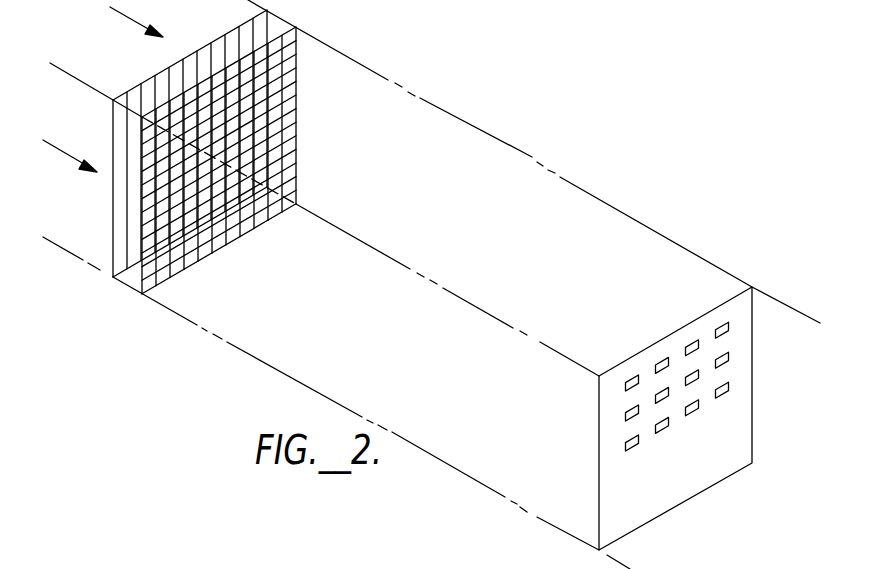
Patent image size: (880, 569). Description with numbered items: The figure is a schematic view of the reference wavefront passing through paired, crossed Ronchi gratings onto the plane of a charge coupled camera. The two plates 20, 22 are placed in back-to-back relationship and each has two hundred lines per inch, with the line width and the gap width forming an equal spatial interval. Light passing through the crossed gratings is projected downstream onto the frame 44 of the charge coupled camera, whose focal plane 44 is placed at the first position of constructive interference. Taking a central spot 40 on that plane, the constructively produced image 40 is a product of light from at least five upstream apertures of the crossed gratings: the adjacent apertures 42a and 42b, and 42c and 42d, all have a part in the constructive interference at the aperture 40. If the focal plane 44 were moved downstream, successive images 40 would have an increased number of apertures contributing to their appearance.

The Ronchi grating 20 is at (113, 223).
The Ronchi grating 22 is at (172, 264).
The central spot 40 is at (658, 402).
The adjacent aperture 42a is at (627, 416).
The adjacent aperture 42b is at (694, 378).
The adjacent aperture 42c is at (662, 357).
The adjacent aperture 42d is at (662, 433).
The charge coupled camera 44 is at (740, 421).